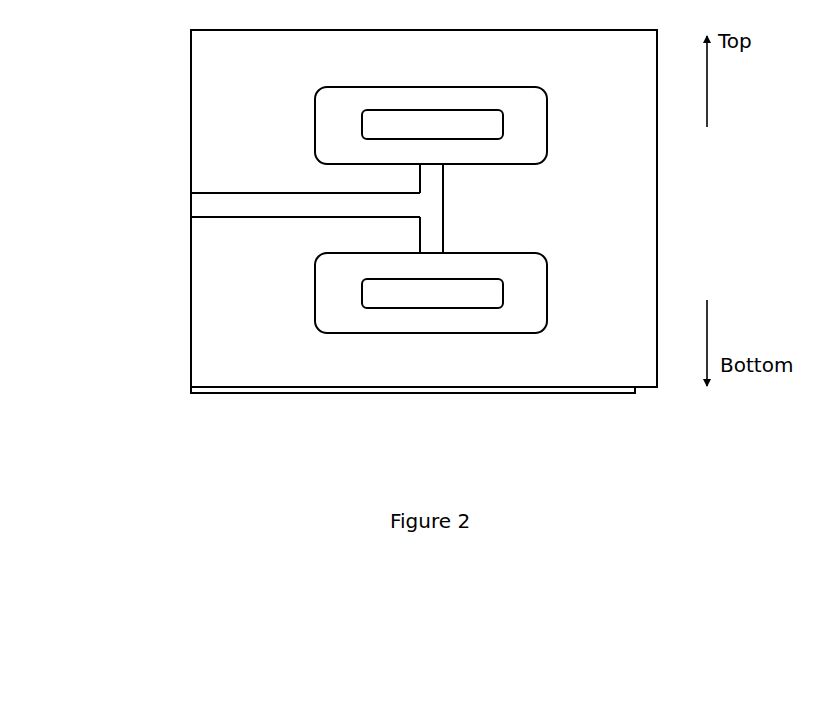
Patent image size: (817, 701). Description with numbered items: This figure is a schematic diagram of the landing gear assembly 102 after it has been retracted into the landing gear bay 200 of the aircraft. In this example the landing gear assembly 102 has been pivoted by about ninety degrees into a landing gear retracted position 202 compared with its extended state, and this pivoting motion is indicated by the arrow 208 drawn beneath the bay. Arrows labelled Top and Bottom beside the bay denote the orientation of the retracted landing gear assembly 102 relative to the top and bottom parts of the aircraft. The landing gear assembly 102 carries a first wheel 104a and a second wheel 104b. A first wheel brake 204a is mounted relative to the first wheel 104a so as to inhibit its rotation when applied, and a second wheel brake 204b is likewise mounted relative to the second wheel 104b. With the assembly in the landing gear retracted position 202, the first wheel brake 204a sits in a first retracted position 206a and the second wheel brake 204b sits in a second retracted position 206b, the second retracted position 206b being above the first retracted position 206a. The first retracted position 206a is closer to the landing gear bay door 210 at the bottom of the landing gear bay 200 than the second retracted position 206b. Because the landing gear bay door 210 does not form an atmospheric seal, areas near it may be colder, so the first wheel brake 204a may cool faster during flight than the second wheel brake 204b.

The landing gear bay 200 is at (158, 110).
The landing gear retracted position 202 is at (267, 137).
The landing gear assembly 102 is at (287, 238).
The first wheel 104a is at (527, 253).
The second wheel 104b is at (547, 112).
The first wheel brake 204a is at (459, 308).
The second wheel brake 204b is at (459, 109).
The first retracted position 206a is at (518, 290).
The second retracted position 206b is at (518, 131).
The arrow 208 is at (228, 478).
The landing gear bay door 210 is at (580, 393).